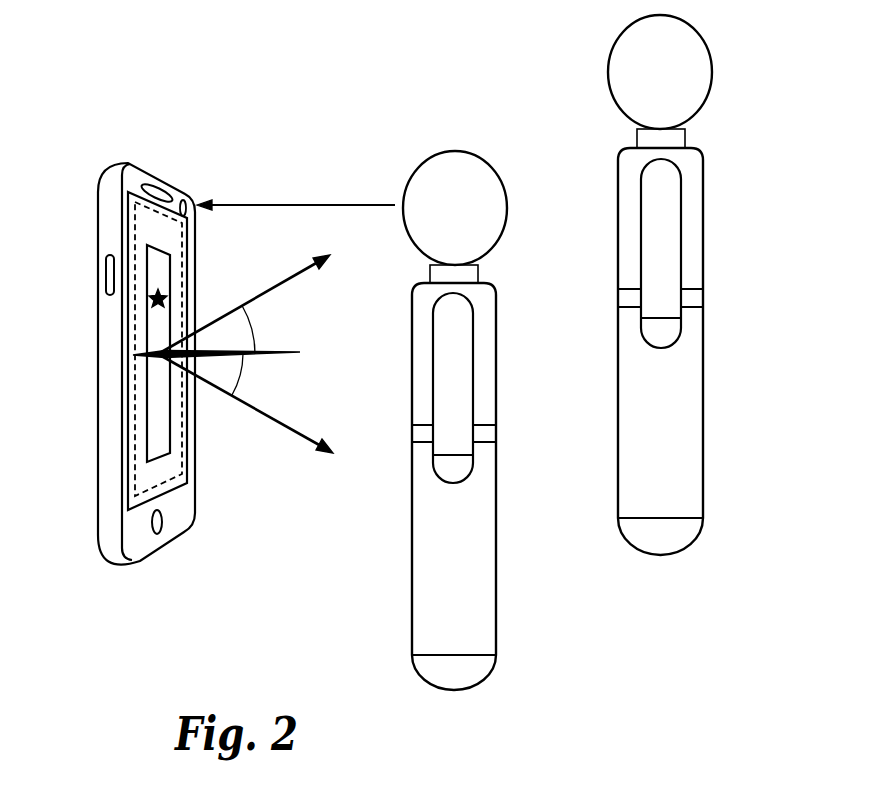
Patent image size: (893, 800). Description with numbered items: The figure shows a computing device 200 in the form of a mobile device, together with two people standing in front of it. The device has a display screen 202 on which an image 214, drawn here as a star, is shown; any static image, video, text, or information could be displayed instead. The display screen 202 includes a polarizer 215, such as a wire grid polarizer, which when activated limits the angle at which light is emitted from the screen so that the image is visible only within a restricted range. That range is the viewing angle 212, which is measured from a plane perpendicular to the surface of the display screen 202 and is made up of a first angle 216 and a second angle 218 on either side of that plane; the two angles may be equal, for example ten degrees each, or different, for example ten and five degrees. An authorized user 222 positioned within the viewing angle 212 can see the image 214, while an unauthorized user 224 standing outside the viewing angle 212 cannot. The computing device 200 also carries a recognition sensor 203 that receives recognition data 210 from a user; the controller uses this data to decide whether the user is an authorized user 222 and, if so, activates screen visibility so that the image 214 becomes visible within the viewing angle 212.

The computing device 200 is at (110, 183).
The display screen 202 is at (150, 232).
The recognition sensor 203 is at (187, 196).
The recognition data 210 is at (316, 205).
The viewing angle 212 is at (283, 430).
The image 214 is at (152, 400).
The polarizer 215 is at (183, 260).
The first angle 216 is at (282, 316).
The second angle 218 is at (283, 392).
The authorized user 222 is at (489, 320).
The unauthorized user 224 is at (696, 182).